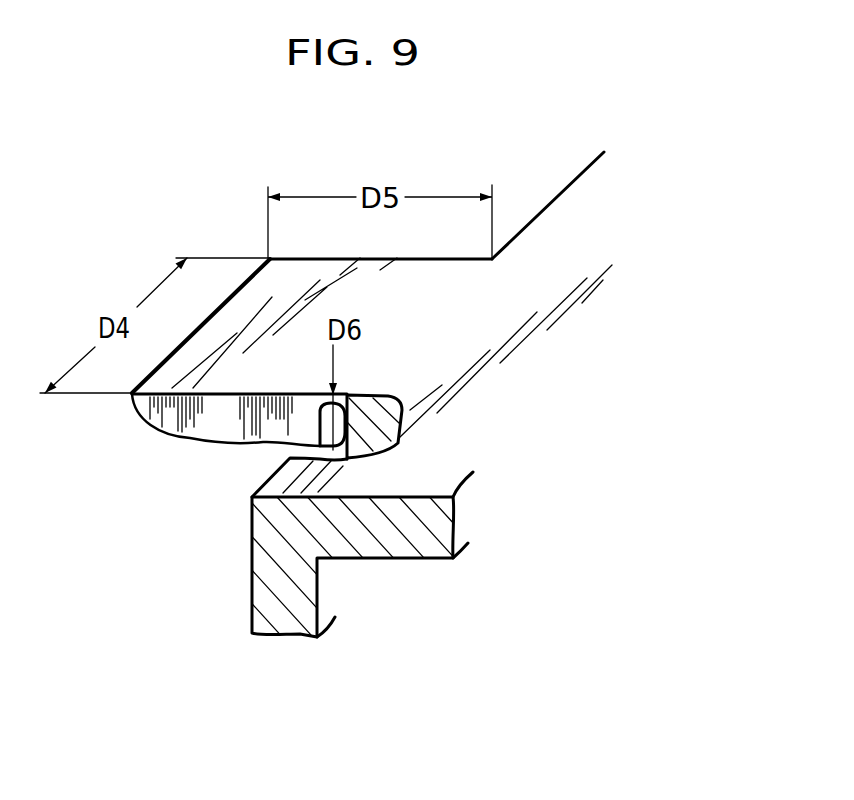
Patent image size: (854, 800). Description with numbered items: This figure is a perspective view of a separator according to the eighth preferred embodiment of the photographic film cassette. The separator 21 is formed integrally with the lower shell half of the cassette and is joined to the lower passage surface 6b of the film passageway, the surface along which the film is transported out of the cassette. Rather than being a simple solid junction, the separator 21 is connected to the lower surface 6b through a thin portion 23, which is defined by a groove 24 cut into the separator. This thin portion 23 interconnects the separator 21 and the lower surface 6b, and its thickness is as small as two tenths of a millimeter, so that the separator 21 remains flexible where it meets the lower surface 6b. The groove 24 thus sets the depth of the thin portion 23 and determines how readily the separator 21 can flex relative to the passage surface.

The separator 21 is at (252, 291).
The lower passage surface 6b is at (557, 214).
The thin portion 23 is at (347, 394).
The groove 24 is at (320, 433).